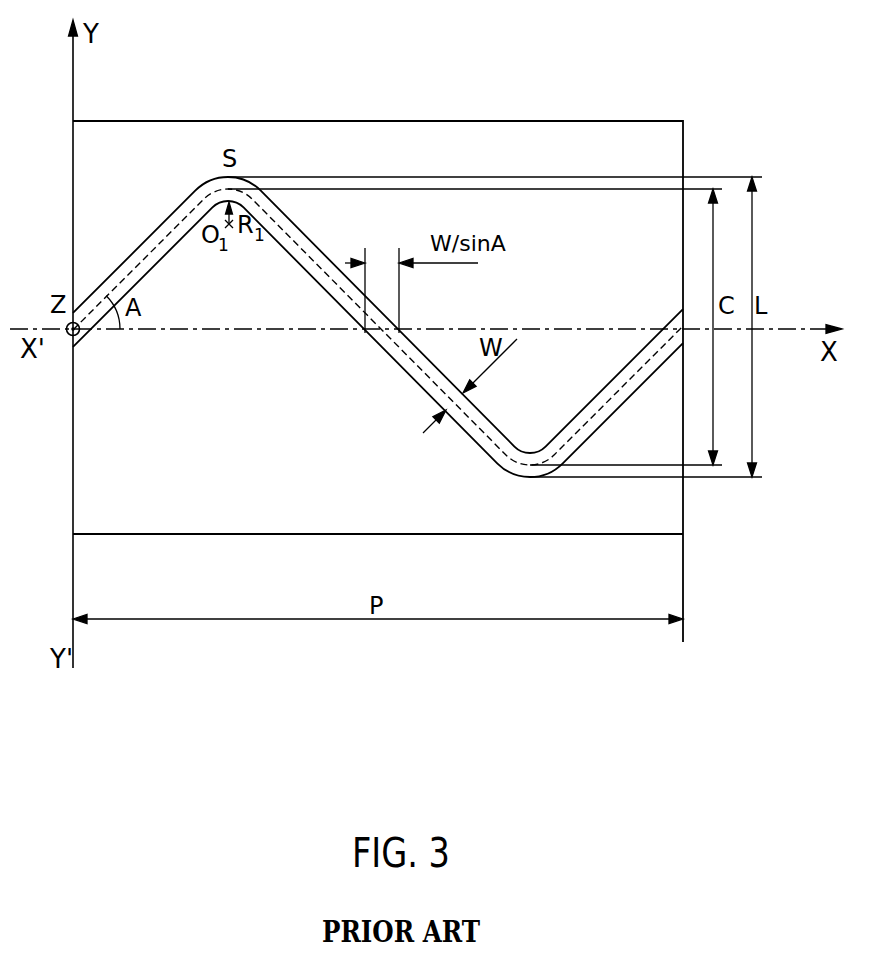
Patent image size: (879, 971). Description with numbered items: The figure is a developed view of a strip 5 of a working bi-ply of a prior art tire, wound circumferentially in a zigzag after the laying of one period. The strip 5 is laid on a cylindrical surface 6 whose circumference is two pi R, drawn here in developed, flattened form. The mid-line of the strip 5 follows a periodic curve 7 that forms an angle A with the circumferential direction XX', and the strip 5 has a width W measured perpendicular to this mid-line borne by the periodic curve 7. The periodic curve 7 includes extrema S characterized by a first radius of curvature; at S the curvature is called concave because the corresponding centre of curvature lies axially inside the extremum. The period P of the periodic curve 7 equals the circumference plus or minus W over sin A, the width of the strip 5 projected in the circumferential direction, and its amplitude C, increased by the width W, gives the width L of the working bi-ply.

The strip 5 is at (127, 258).
The cylindrical surface 6 is at (430, 147).
The periodic curve 7 is at (162, 243).